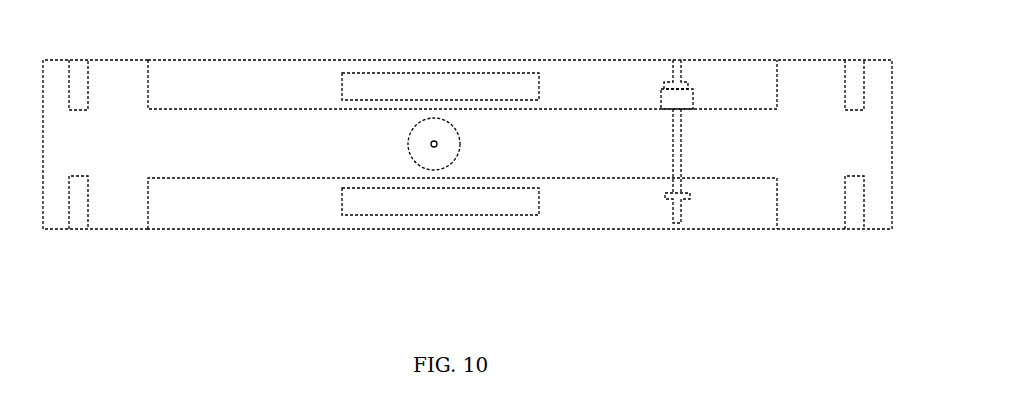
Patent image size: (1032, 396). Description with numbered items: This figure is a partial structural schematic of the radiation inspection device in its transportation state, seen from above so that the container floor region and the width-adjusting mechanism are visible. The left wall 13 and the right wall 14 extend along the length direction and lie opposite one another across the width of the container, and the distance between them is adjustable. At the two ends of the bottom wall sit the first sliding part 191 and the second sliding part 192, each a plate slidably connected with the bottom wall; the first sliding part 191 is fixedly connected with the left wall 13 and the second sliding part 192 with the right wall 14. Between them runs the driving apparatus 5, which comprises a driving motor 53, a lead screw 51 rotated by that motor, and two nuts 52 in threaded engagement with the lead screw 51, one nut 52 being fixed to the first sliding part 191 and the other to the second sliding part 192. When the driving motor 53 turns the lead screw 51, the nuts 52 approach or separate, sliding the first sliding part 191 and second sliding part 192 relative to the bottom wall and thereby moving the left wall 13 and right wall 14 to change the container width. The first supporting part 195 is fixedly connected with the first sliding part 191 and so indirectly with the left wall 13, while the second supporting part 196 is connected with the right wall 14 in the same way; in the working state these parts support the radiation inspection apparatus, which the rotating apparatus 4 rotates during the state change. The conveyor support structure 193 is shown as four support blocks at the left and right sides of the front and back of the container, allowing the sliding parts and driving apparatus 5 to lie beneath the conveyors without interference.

The rotating apparatus 4 is at (447, 150).
The driving apparatus 5 is at (724, 143).
The left wall 13 is at (285, 229).
The right wall 14 is at (487, 59).
The lead screw 51 is at (678, 170).
The nut 52 is at (683, 66).
The driving motor 53 is at (683, 98).
The first sliding part 191 is at (160, 202).
The second sliding part 192 is at (140, 72).
The conveyor support structure 193 is at (75, 80).
The first supporting part 195 is at (478, 207).
The second supporting part 196 is at (388, 90).